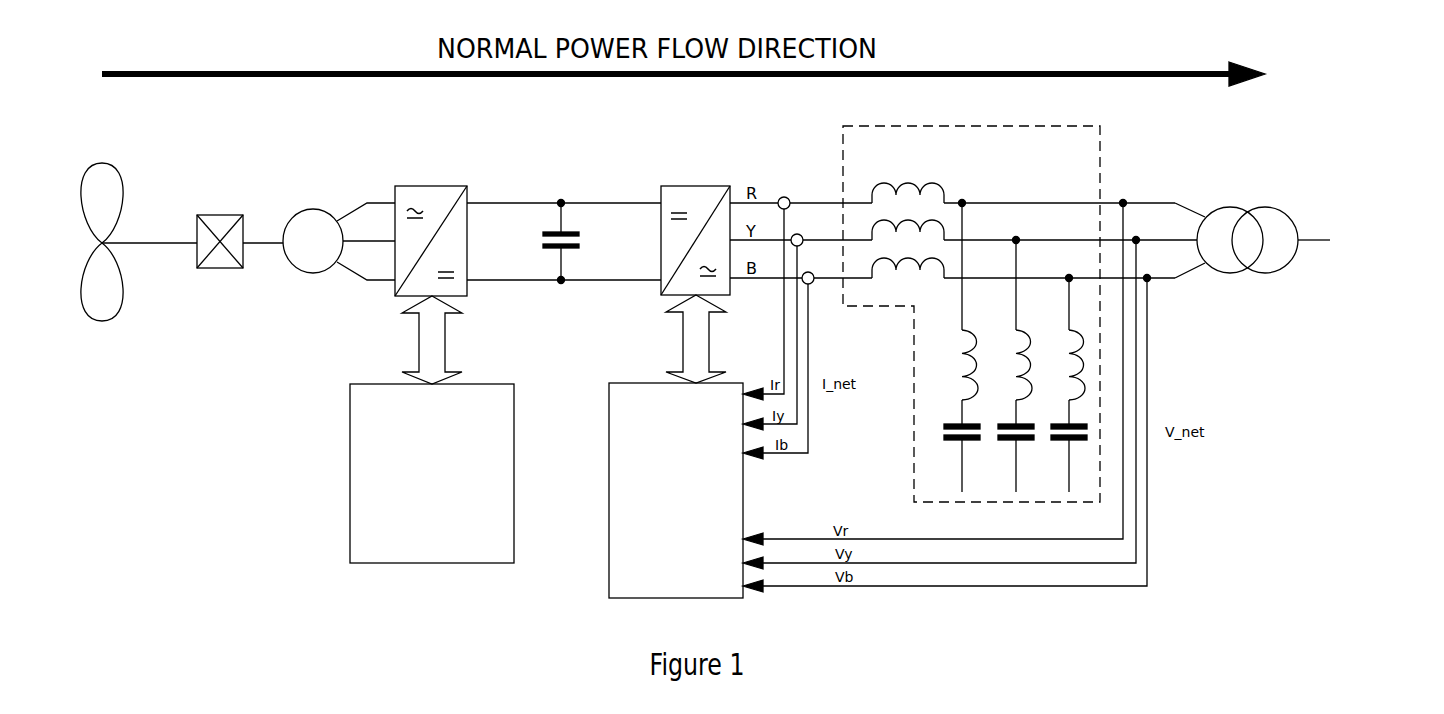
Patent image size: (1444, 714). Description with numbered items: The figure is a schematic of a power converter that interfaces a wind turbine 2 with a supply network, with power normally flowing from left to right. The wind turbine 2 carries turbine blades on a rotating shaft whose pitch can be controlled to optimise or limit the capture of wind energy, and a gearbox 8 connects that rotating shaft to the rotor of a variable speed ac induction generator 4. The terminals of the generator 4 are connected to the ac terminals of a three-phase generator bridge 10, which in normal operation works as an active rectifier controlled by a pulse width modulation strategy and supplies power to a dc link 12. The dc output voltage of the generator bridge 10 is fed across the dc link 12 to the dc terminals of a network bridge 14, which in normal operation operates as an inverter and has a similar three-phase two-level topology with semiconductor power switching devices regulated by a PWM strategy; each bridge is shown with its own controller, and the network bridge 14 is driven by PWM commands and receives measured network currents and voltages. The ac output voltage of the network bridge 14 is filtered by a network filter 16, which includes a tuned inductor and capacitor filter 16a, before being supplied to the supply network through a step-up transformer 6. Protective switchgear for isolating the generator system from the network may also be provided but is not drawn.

The wind turbine 2 is at (107, 199).
The variable speed ac induction generator 4 is at (307, 236).
The step-up transformer 6 is at (1229, 230).
The gearbox 8 is at (217, 258).
The generator bridge 10 is at (415, 192).
The dc link 12 is at (558, 180).
The network bridge 14 is at (680, 192).
The network filter 16 is at (967, 316).
The tuned inductor and capacitor (LC) filter 16a is at (935, 365).